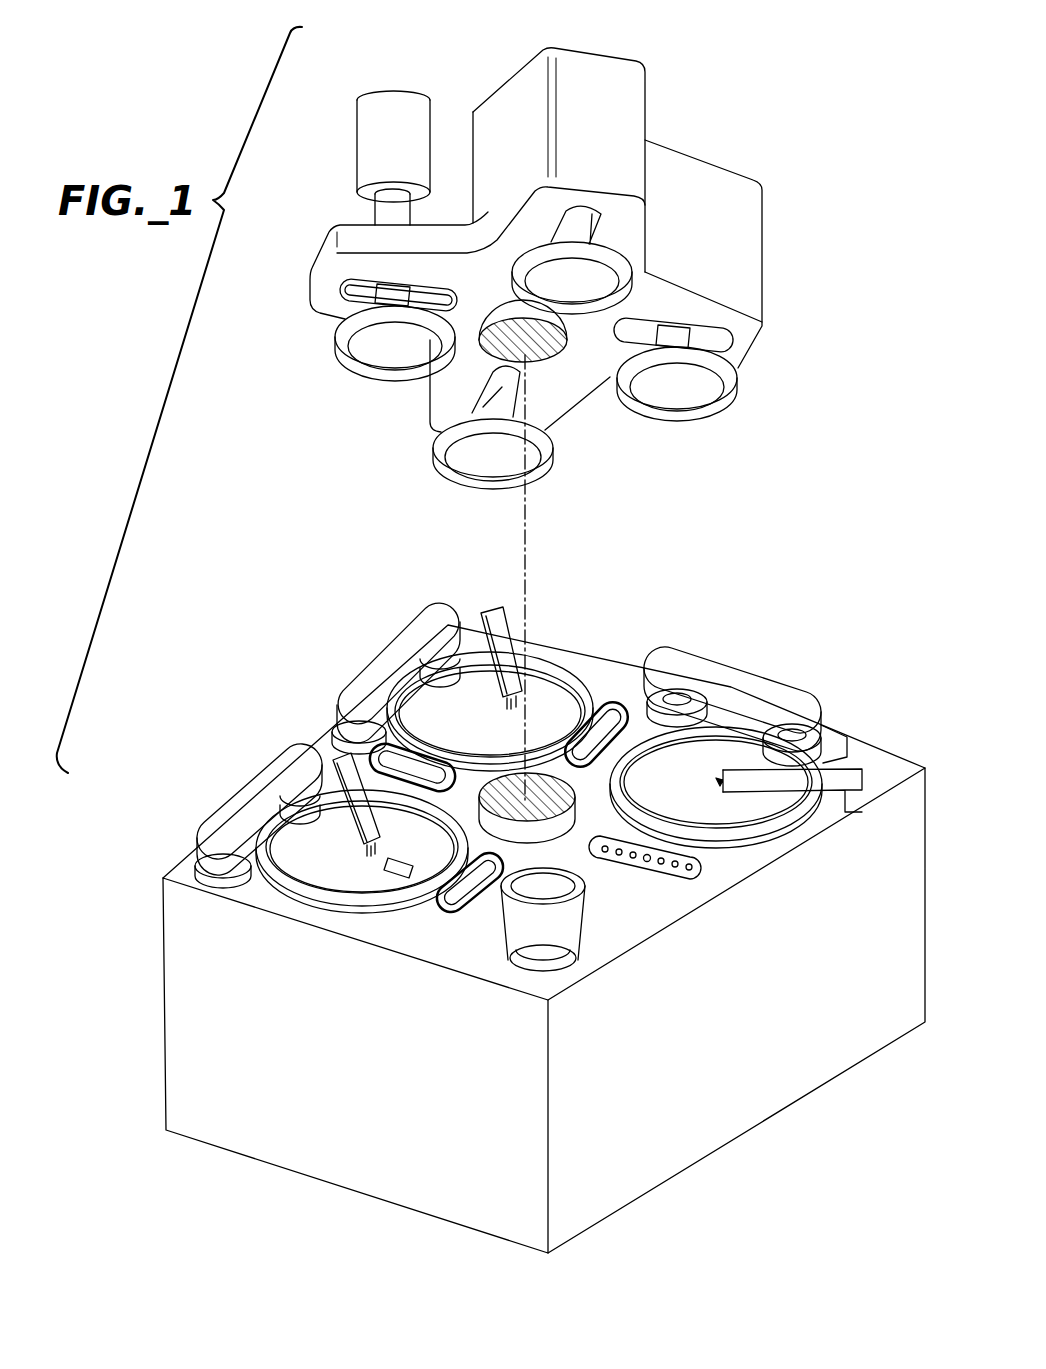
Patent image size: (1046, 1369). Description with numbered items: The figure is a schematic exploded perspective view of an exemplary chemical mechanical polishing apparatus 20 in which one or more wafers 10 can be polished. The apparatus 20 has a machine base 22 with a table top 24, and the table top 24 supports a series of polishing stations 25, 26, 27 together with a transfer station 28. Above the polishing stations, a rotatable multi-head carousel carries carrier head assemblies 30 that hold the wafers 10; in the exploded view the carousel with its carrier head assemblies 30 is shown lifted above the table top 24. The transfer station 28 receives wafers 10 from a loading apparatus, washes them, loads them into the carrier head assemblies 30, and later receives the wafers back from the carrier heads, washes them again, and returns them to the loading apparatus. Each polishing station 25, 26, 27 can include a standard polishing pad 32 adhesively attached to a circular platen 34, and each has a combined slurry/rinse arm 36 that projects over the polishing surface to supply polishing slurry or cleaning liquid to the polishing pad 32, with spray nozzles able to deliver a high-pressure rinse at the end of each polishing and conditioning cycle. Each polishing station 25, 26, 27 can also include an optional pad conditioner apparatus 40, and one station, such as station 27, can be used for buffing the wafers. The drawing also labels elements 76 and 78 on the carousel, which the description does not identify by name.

The wafer 10 is at (593, 292).
The chemical mechanical polishing apparatus 20 is at (718, 84).
The machine base 22 is at (180, 1008).
The table top 24 is at (435, 947).
The polishing station 25 is at (234, 786).
The polishing station 26 is at (345, 672).
The polishing station 27 is at (773, 673).
The transfer station 28 is at (538, 962).
The carrier head assembly 30 is at (337, 356).
The polishing pad 32 is at (537, 672).
The circular platen 34 is at (568, 662).
The slurry/rinse arm 36 is at (498, 605).
The pad conditioner apparatus 40 is at (405, 642).
The carousel support shaft 76 is at (357, 127).
The slot 78 is at (386, 300).